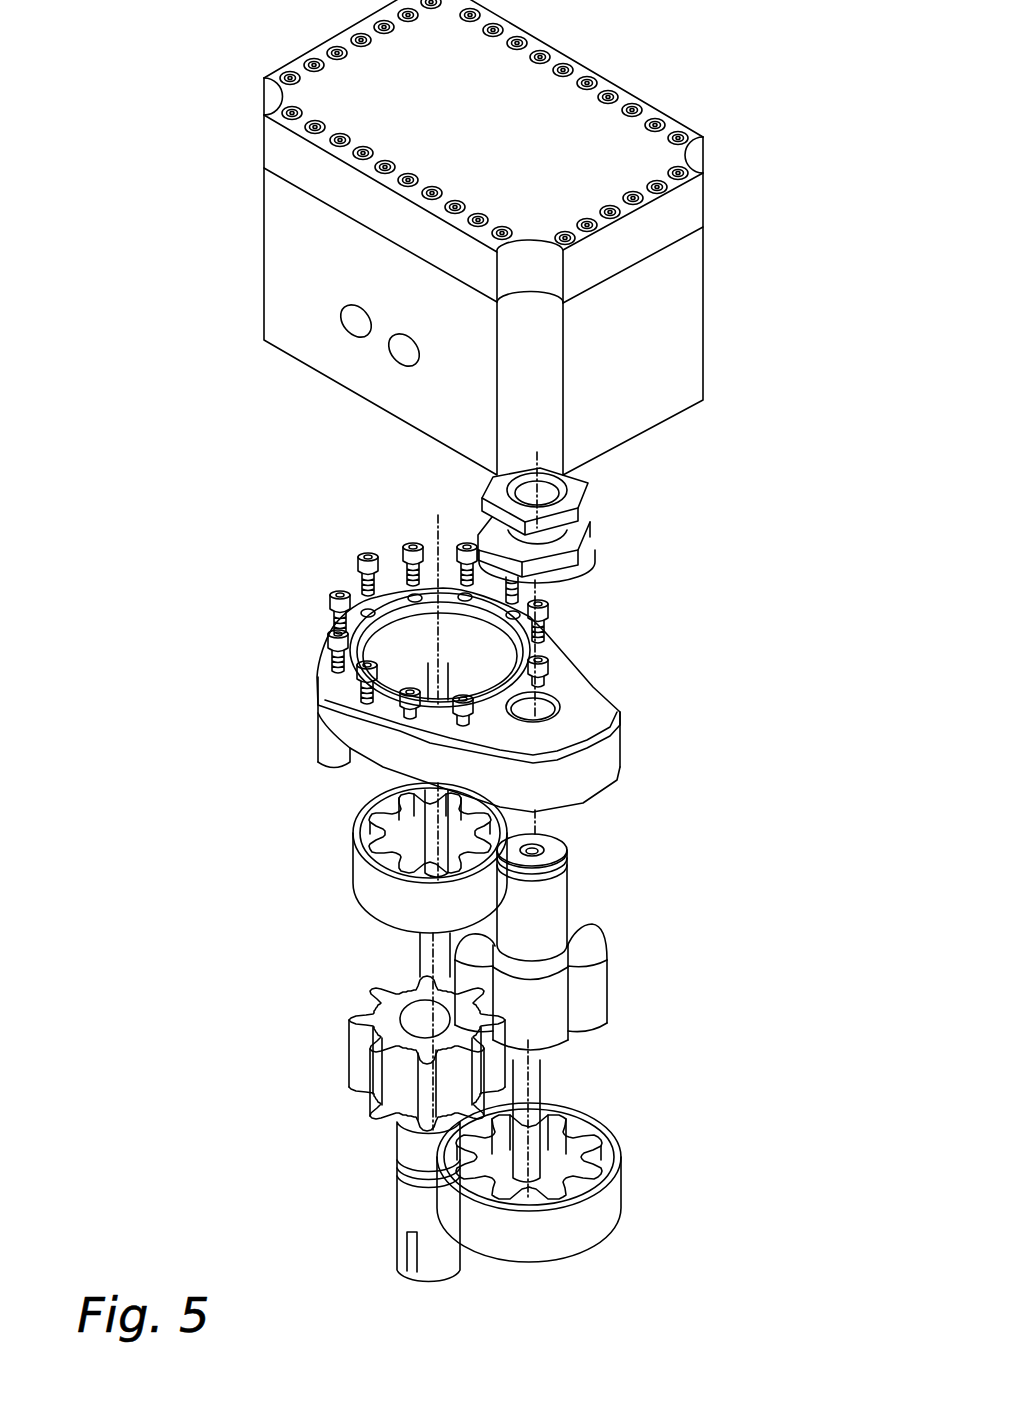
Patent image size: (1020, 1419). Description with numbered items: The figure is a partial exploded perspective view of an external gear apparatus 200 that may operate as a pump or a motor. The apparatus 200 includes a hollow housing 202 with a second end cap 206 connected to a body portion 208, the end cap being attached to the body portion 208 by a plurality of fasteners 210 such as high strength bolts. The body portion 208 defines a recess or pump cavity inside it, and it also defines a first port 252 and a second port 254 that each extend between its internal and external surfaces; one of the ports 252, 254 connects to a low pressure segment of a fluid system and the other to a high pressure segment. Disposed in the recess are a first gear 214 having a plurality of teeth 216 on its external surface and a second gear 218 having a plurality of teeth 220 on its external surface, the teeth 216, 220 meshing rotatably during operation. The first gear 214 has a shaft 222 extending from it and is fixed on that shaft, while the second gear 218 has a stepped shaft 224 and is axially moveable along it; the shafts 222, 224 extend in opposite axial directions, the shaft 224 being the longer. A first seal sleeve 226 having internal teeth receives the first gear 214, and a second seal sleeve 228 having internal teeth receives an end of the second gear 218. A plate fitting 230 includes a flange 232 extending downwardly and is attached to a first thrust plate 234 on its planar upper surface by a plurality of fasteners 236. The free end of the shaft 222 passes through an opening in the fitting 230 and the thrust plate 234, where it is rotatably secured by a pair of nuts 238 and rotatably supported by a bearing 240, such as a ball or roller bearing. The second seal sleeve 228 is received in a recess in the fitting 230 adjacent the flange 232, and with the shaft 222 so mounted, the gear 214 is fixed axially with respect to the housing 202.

The external gear apparatus 200 is at (133, 742).
The hollow housing 202 is at (695, 115).
The second end cap 206 is at (692, 207).
The body portion 208 is at (681, 369).
The fasteners 210 is at (567, 64).
The first port 252 is at (345, 326).
The second port 254 is at (394, 358).
The nuts 238 is at (583, 466).
The bearing 240 is at (598, 527).
The fasteners 236 is at (413, 543).
The first thrust plate 234 is at (598, 691).
The plate fitting 230 is at (627, 750).
The flange 232 is at (327, 748).
The second seal sleeve 228 is at (347, 880).
The shaft 222 is at (567, 883).
The teeth 216 is at (593, 957).
The teeth 220 is at (383, 980).
The second gear 218 is at (364, 1114).
The first gear 214 is at (614, 1026).
The first seal sleeve 226 is at (588, 1223).
The stepped shaft 224 is at (432, 1267).